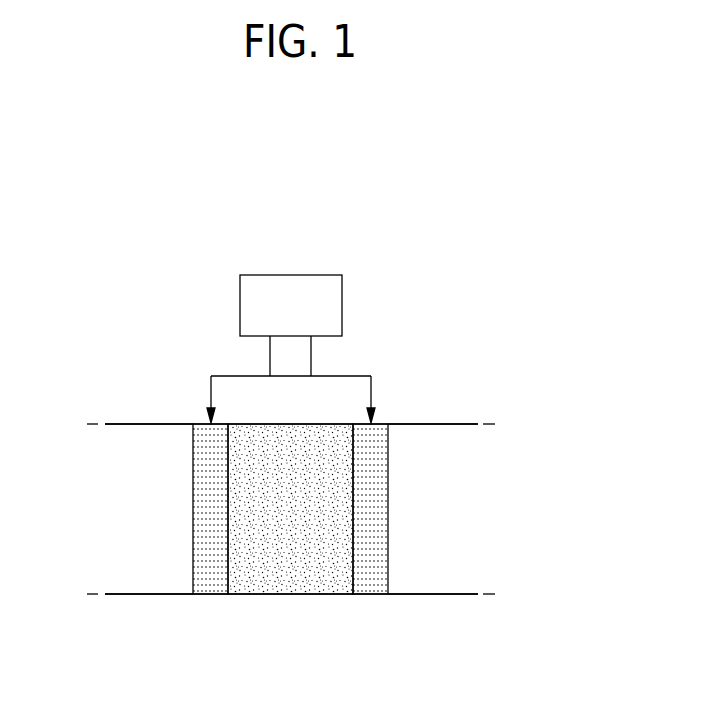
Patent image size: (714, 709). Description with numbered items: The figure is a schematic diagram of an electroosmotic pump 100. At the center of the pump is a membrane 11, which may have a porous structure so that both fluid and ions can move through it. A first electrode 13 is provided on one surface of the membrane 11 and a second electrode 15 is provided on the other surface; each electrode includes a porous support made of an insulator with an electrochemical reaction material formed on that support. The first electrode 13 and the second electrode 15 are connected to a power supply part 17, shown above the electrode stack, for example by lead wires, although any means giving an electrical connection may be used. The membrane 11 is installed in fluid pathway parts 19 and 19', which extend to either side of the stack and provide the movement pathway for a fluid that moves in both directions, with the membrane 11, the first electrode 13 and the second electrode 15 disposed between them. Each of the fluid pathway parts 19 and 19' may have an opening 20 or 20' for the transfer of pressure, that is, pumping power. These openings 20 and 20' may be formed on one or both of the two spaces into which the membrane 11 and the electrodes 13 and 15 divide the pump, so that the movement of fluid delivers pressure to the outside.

The electroosmotic pump 100 is at (500, 252).
The membrane 11 is at (291, 588).
The first electrode 13 is at (213, 588).
The second electrode 15 is at (371, 588).
The power supply part 17 is at (292, 275).
The fluid pathway part 19 is at (149, 405).
The fluid pathway part 19' is at (433, 405).
The opening 20 is at (110, 547).
The opening 20' is at (472, 524).